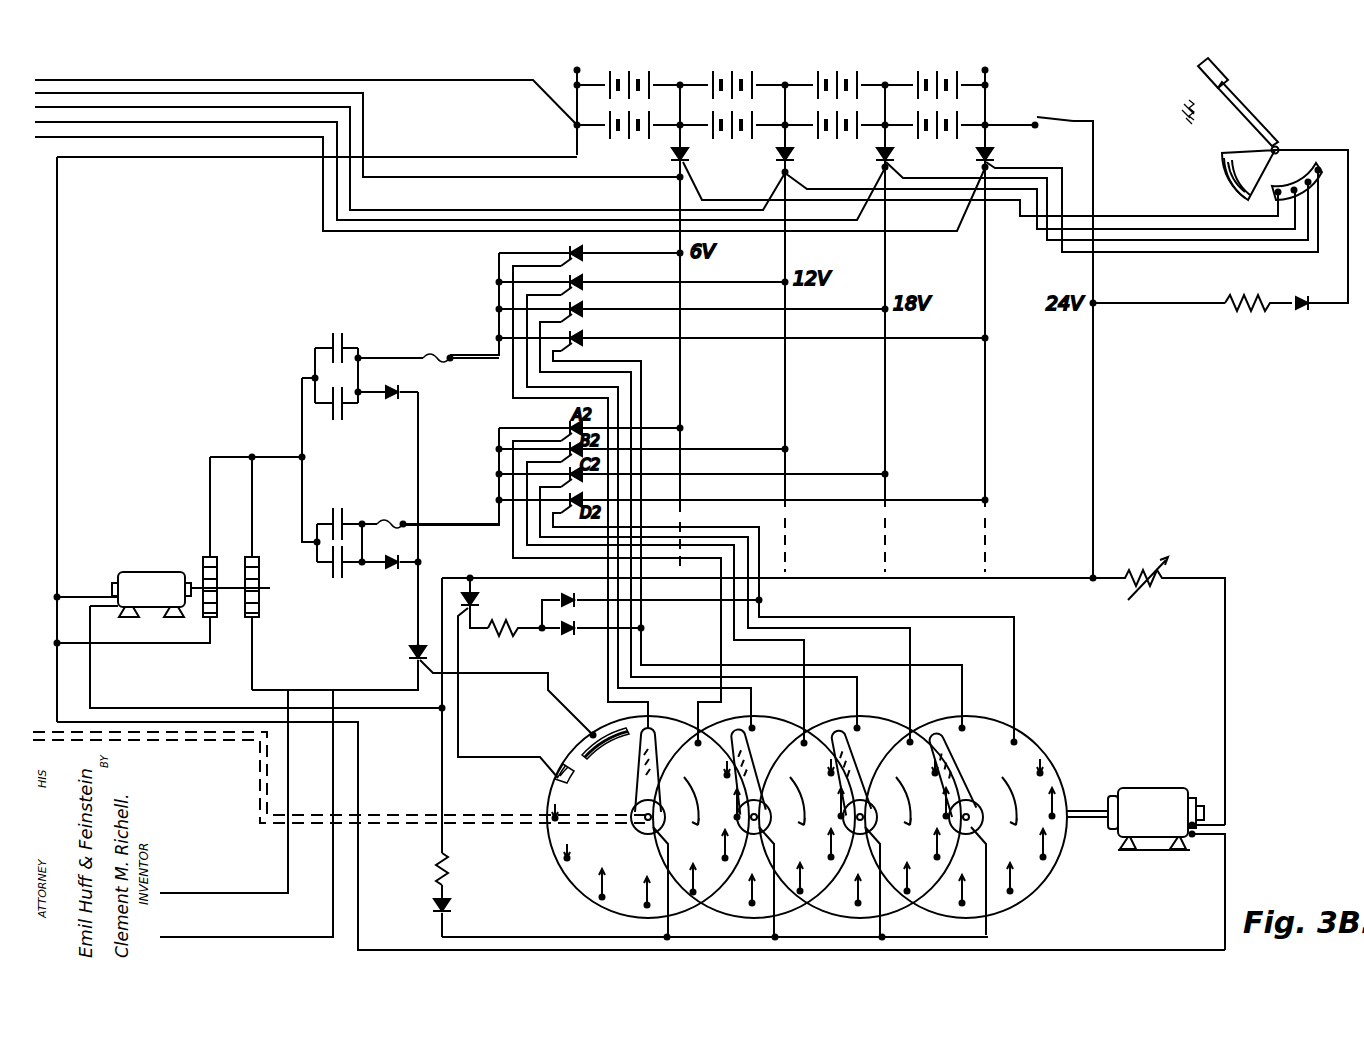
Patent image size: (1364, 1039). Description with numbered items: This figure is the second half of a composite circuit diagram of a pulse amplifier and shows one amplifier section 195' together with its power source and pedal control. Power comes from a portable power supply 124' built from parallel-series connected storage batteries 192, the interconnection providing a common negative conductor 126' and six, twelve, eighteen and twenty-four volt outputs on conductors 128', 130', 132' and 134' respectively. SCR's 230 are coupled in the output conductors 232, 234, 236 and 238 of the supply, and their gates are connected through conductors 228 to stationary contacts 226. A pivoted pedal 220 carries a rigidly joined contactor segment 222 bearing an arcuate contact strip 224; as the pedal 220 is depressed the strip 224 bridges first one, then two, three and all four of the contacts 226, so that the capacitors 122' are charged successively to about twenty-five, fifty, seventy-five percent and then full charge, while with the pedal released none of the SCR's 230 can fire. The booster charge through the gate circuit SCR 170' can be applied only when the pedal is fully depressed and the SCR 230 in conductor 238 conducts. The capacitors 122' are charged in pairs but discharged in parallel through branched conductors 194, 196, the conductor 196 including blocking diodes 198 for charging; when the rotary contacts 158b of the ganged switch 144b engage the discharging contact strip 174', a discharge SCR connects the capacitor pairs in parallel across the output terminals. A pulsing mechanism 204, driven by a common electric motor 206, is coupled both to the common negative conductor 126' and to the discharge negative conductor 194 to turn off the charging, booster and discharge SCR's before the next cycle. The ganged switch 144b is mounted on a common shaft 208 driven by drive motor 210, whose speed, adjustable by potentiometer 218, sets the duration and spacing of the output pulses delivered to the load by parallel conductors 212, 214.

The portable power supply 124' is at (730, 111).
The common negative conductor 126' is at (512, 401).
The storage batteries 192 is at (653, 104).
The 6 volt output conductor 128' is at (709, 328).
The 12 volt output conductor 130' is at (814, 328).
The 18 volt output conductor 132' is at (914, 328).
The 24 volt output conductor 134' is at (1014, 321).
The SCR's 230 is at (672, 155).
The output conductor 232 is at (686, 138).
The output conductor 234 is at (1000, 207).
The output conductor 236 is at (892, 145).
The output conductor 238 is at (1011, 127).
The pivoted pedal 220 is at (1244, 112).
The contactor segment 222 is at (1217, 155).
The arcuate contact strip 224 is at (1318, 164).
The stationary contacts 226 is at (1322, 180).
The conductors 228 is at (1212, 228).
The amplifier section 195' is at (698, 480).
The capacitors 122' is at (403, 361).
The branched conductor 194 is at (275, 455).
The branched conductor 196 is at (418, 480).
The blocking diodes 198 is at (398, 402).
The pulsing mechanism 204 is at (200, 515).
The electric motor 206 is at (148, 570).
The gate circuit SCR 170' is at (763, 756).
The discharging contact strip 174' is at (567, 733).
The rotary contacts 158b is at (628, 778).
The ganged switch 144b is at (778, 808).
The potentiometer 218 is at (1157, 584).
The drive motor 210 is at (1152, 787).
The common shaft 208 is at (260, 782).
The parallel conductor 212 is at (270, 894).
The parallel conductor 214 is at (265, 942).